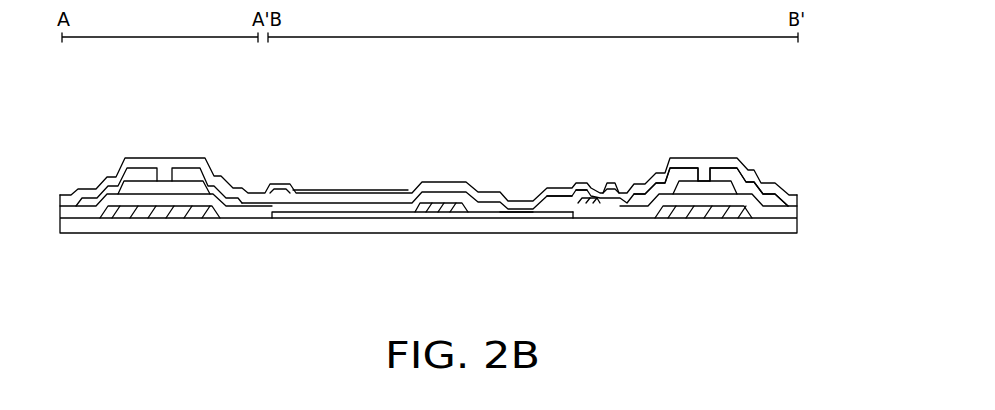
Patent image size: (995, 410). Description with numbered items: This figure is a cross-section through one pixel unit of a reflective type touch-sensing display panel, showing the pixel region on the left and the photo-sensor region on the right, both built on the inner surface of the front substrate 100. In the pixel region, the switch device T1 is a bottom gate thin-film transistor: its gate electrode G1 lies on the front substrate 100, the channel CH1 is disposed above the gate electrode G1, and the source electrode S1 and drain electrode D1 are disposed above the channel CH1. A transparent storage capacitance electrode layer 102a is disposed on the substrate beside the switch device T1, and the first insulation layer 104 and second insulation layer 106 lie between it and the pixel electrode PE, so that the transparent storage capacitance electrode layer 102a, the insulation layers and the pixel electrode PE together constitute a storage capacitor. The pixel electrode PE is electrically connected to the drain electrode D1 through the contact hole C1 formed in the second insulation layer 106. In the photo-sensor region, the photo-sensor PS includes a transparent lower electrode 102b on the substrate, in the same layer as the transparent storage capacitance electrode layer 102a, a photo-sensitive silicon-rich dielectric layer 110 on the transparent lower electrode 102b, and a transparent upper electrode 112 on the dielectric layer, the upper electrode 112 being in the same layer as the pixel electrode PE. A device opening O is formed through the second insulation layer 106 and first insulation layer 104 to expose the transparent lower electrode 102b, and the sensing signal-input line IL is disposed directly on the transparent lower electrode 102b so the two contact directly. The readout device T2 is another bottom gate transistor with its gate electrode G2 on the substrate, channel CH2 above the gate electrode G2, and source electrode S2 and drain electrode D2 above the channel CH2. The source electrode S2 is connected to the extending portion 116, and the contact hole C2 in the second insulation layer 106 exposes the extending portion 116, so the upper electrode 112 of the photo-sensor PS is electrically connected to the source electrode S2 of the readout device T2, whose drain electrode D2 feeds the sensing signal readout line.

The front substrate 100 is at (797, 228).
The first insulation layer 104 is at (797, 210).
The second insulation layer 106 is at (797, 193).
The transparent storage capacitance electrode layer 102a is at (348, 214).
The transparent lower electrode 102b is at (523, 212).
The photo-sensitive silicon-rich dielectric layer 110 is at (574, 190).
The upper electrode 112 is at (560, 188).
The photo-sensor PS is at (613, 77).
The extending portion 116 is at (590, 200).
The device opening O is at (507, 200).
The sensing signal-input line IL is at (445, 205).
The pixel electrode PE is at (335, 190).
The contact hole C1 is at (268, 186).
The contact hole C2 is at (590, 187).
The source electrode S1 is at (93, 205).
The channel CH1 is at (157, 184).
The gate electrode G1 is at (185, 208).
The drain electrode D1 is at (220, 190).
The switch device T1 is at (245, 290).
The source electrode S2 is at (657, 200).
The channel CH2 is at (690, 183).
The gate electrode G2 is at (720, 208).
The drain electrode D2 is at (765, 198).
The readout device T2 is at (780, 300).